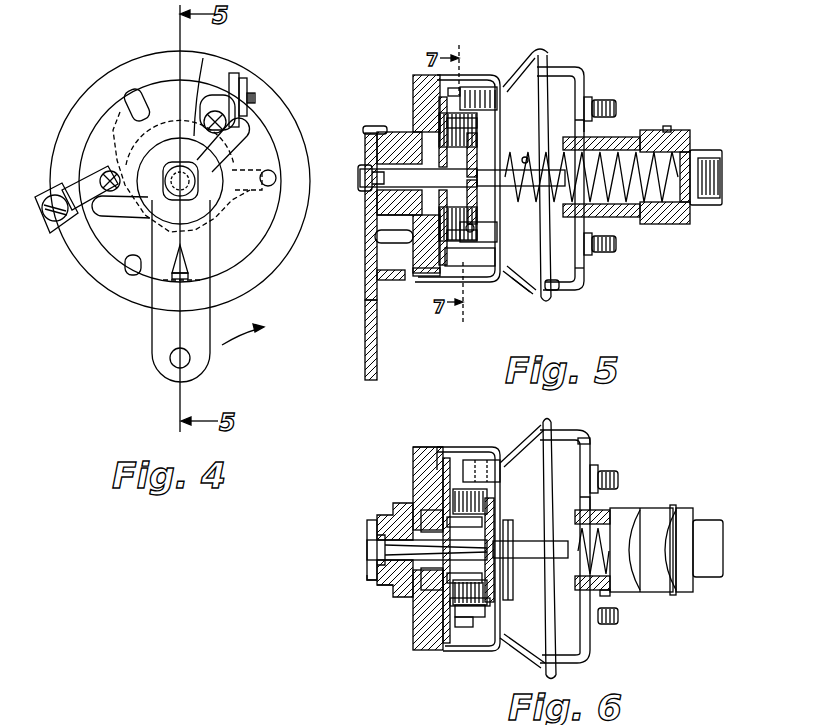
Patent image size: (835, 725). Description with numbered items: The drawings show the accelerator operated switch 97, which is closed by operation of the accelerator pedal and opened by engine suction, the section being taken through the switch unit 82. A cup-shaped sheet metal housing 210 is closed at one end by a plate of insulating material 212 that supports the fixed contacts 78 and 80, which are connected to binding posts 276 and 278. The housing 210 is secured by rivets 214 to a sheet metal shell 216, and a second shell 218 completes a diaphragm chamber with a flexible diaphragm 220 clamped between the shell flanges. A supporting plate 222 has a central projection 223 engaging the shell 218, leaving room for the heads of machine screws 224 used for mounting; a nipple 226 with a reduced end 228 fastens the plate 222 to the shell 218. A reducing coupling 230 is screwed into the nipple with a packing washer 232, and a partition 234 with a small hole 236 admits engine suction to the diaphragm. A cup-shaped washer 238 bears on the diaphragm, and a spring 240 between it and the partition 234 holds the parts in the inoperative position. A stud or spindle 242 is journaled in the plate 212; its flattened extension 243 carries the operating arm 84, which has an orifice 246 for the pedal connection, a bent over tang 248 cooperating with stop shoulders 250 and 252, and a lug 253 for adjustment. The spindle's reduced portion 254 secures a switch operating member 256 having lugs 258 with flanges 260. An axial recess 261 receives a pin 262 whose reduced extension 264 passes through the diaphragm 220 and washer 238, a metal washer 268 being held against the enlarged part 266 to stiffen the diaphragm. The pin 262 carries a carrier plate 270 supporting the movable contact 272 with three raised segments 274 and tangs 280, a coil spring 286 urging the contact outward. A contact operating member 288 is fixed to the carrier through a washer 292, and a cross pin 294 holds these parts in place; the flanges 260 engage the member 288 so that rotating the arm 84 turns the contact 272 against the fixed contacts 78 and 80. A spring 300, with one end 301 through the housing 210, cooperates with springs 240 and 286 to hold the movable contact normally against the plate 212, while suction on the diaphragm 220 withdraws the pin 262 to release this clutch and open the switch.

In FIG. 4, the fixed contact 78 is at (243, 122).
In FIG. 4, the fixed contact 80 is at (107, 177).
In FIG. 5, the actuator assembly 82 is at (458, 130).
In FIG. 4, the operating arm 84 is at (168, 326).
In FIG. 5, the operating arm 84 is at (365, 323).
In FIG. 6, the operating arm 84 is at (367, 573).
In FIG. 4, the switch 97 is at (180, 166).
In FIG. 5, the switch 97 is at (603, 157).
In FIG. 5, the cup-shaped sheet metal housing 210 is at (494, 283).
In FIG. 6, the cup-shaped sheet metal housing 210 is at (500, 450).
In FIG. 5, the plate of insulating material 212 is at (410, 283).
In FIG. 5, the rivet 214 is at (505, 86).
In FIG. 6, the rivet 214 is at (478, 461).
In FIG. 5, the sheet metal shell 216 is at (518, 282).
In FIG. 6, the sheet metal shell 216 is at (540, 640).
In FIG. 5, the second shell 218 is at (557, 68).
In FIG. 6, the second shell 218 is at (583, 438).
In FIG. 5, the flexible diaphragm 220 is at (556, 290).
In FIG. 5, the supporting plate 222 is at (584, 275).
In FIG. 6, the supporting plate 222 is at (590, 448).
In FIG. 5, the projection 223 is at (572, 128).
In FIG. 6, the projection 223 is at (588, 500).
In FIG. 5, the machine screws 224 is at (595, 100).
In FIG. 6, the machine screws 224 is at (607, 623).
In FIG. 5, the nipple 226 is at (610, 220).
In FIG. 6, the nipple 226 is at (647, 592).
In FIG. 5, the reduced end 228 is at (592, 220).
In FIG. 5, the reducing coupling 230 is at (688, 224).
In FIG. 6, the reducing coupling 230 is at (682, 592).
In FIG. 5, the packing washer 232 is at (676, 224).
In FIG. 6, the packing washer 232 is at (673, 506).
In FIG. 5, the partition 234 is at (696, 212).
In FIG. 5, the hole 236 is at (693, 173).
In FIG. 5, the cup-shaped washer 238 is at (580, 78).
In FIG. 6, the cup-shaped washer 238 is at (584, 470).
In FIG. 5, the spring 240 is at (665, 126).
In FIG. 6, the spring 240 is at (605, 593).
In FIG. 5, the stud or spindle 242 is at (413, 165).
In FIG. 4, the flattened extension 243 is at (198, 181).
In FIG. 5, the flattened extension 243 is at (362, 180).
In FIG. 6, the flattened extension 243 is at (367, 550).
In FIG. 4, the orifice 246 is at (175, 363).
In FIG. 6, the orifice 246 is at (413, 450).
In FIG. 5, the bent over tang 248 is at (375, 128).
In FIG. 4, the shoulder 250 is at (203, 58).
In FIG. 4, the shoulder 252 is at (128, 228).
In FIG. 4, the lug 253 is at (206, 266).
In FIG. 5, the lug 253 is at (390, 285).
In FIG. 5, the reduced portion 254 is at (410, 150).
In FIG. 5, the switch operating member 256 is at (421, 132).
In FIG. 6, the switch operating member 256 is at (420, 508).
In FIG. 6, the lugs 258 is at (423, 477).
In FIG. 6, the flanges 260 is at (438, 508).
In FIG. 5, the axial recess 261 is at (410, 182).
In FIG. 6, the axial recess 261 is at (368, 535).
In FIG. 5, the pin 262 is at (382, 200).
In FIG. 6, the pin 262 is at (415, 545).
In FIG. 5, the reduced extension 264 is at (536, 210).
In FIG. 6, the reduced extension 264 is at (502, 510).
In FIG. 5, the enlarged part 266 is at (486, 128).
In FIG. 6, the enlarged part 266 is at (470, 547).
In FIG. 5, the metal washer 268 is at (525, 157).
In FIG. 6, the metal washer 268 is at (565, 600).
In FIG. 5, the carrier plate 270 is at (462, 250).
In FIG. 6, the carrier plate 270 is at (473, 617).
In FIG. 6, the movable contact 272 is at (457, 650).
In FIG. 6, the raised segments 274 is at (463, 604).
In FIG. 4, the binding post 276 is at (232, 76).
In FIG. 4, the binding post 278 is at (50, 222).
In FIG. 6, the tangs or lugs 280 is at (482, 605).
In FIG. 5, the coil spring 286 is at (445, 270).
In FIG. 6, the coil spring 286 is at (467, 473).
In FIG. 5, the contact operating member 288 is at (377, 262).
In FIG. 6, the contact operating member 288 is at (457, 603).
In FIG. 5, the washer 292 is at (472, 230).
In FIG. 5, the cross pin 294 is at (383, 171).
In FIG. 6, the cross pin 294 is at (377, 588).
In FIG. 5, the spring 300 is at (484, 92).
In FIG. 6, the spring 300 is at (512, 587).
In FIG. 5, the spring end 301 is at (520, 300).